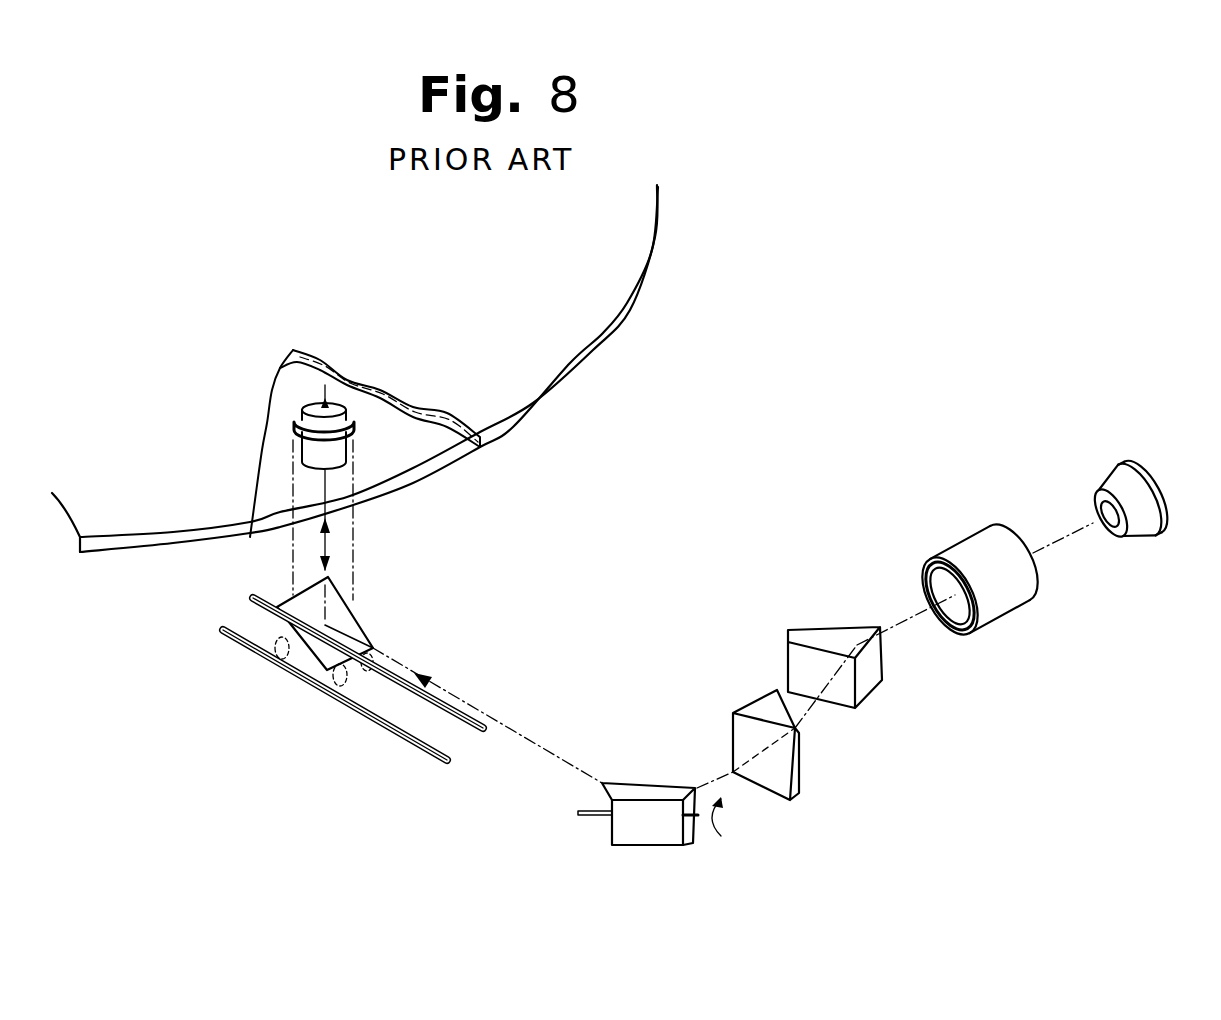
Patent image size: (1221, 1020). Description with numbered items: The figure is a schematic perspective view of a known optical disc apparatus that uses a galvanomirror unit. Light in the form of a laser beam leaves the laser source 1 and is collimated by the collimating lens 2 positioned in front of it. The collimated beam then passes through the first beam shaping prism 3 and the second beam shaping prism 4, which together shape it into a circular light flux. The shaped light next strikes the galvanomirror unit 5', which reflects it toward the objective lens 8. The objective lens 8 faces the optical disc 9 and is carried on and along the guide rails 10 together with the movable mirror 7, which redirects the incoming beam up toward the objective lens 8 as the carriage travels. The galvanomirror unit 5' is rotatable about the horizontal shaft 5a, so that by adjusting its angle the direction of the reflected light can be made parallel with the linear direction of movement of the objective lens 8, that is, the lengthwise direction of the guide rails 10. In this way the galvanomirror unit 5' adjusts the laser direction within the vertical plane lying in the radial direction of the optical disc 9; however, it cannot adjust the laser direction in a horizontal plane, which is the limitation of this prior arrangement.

The laser source 1 is at (1115, 468).
The collimating lens 2 is at (1000, 610).
The first beam shaping prism 3 is at (868, 688).
The second beam shaping prism 4 is at (790, 765).
The galvanomirror unit 5' is at (667, 835).
The horizontal shaft 5a is at (586, 854).
The movable mirror 7 is at (357, 632).
The objective lens 8 is at (337, 455).
The optical disc 9 is at (572, 348).
The guide rails 10 is at (357, 710).